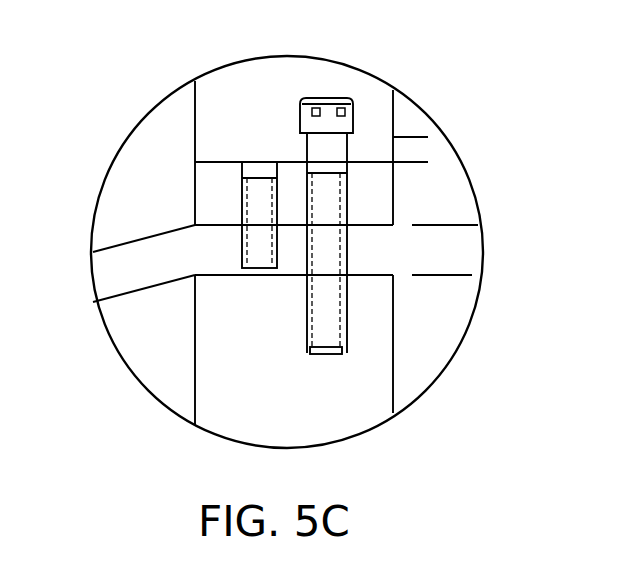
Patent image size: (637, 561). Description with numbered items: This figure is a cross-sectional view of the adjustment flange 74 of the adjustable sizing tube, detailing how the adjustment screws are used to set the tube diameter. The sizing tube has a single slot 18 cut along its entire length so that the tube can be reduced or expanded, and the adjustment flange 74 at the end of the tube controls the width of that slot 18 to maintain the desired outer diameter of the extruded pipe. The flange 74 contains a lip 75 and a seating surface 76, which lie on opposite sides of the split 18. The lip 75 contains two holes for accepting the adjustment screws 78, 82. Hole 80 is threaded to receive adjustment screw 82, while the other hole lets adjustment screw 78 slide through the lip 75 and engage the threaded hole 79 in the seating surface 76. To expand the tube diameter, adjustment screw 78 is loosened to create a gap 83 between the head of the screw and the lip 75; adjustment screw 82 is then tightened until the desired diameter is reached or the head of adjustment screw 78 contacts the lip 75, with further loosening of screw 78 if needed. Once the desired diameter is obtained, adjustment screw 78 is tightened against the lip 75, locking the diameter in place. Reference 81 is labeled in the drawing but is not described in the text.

The adjustment flange 74 is at (298, 97).
The slot 18 is at (450, 253).
The adjustment screw 82 is at (252, 162).
The adjustment screw 78 is at (330, 130).
The threaded hole 79 is at (323, 353).
The hole 80 is at (240, 208).
The gap 83 is at (423, 150).
The lip 75 is at (380, 193).
The screw bore 81 is at (348, 213).
The seating surface 76 is at (370, 277).